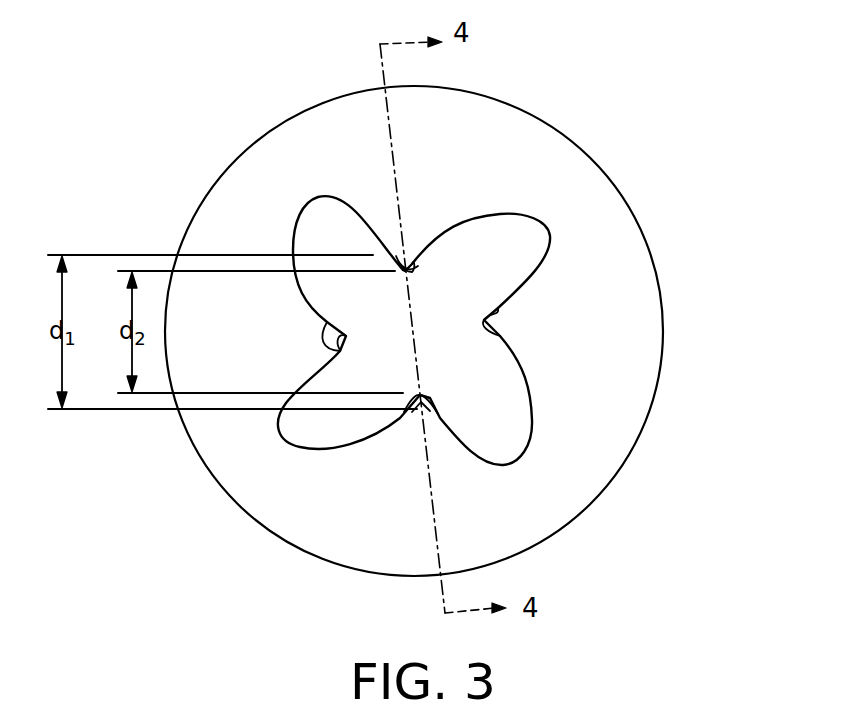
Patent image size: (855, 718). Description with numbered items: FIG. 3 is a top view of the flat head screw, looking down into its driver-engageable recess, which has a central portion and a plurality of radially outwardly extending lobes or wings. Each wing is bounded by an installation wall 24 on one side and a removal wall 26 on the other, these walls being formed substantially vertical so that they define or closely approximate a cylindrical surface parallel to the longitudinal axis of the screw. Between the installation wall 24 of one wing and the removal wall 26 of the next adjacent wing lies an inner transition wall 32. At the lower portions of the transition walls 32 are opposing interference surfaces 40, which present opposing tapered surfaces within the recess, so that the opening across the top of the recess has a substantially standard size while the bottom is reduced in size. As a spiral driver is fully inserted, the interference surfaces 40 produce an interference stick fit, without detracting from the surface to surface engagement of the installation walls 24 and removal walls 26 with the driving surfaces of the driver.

The installation wall 24 is at (352, 200).
The removal wall 26 is at (297, 240).
The inner transition wall 32 is at (406, 256).
The interference surface 40 is at (412, 270).